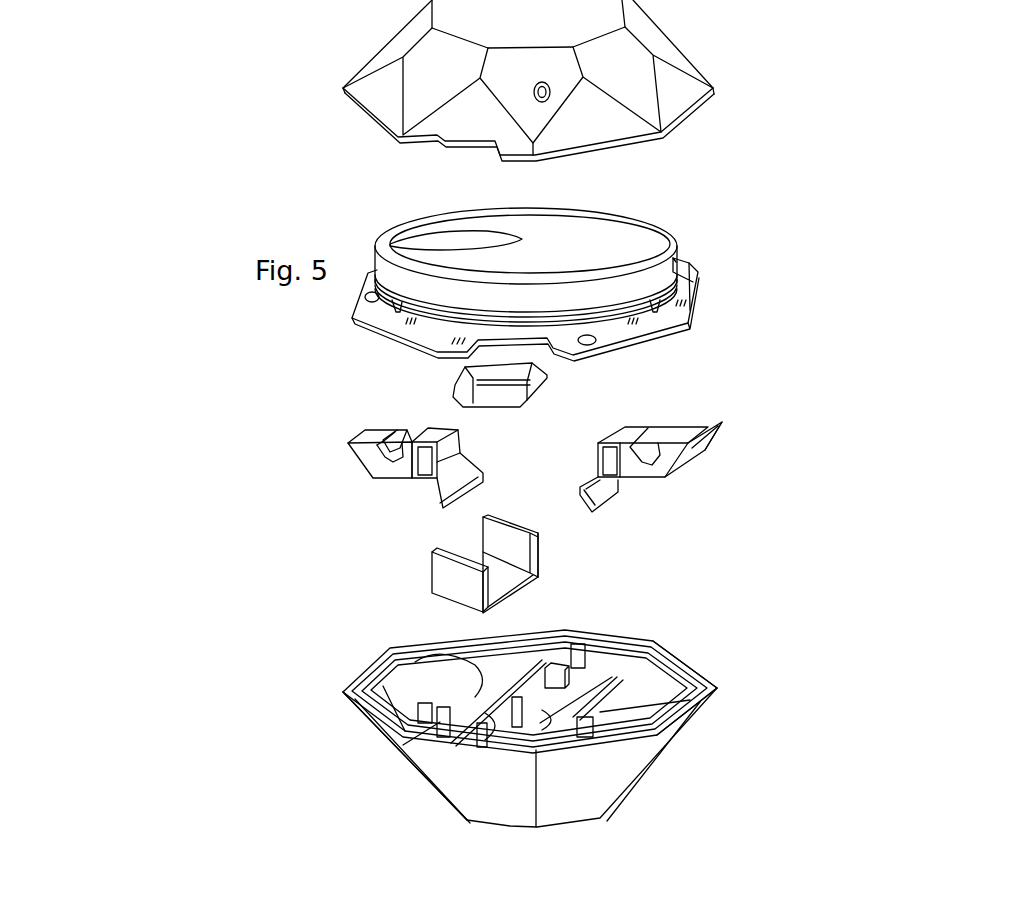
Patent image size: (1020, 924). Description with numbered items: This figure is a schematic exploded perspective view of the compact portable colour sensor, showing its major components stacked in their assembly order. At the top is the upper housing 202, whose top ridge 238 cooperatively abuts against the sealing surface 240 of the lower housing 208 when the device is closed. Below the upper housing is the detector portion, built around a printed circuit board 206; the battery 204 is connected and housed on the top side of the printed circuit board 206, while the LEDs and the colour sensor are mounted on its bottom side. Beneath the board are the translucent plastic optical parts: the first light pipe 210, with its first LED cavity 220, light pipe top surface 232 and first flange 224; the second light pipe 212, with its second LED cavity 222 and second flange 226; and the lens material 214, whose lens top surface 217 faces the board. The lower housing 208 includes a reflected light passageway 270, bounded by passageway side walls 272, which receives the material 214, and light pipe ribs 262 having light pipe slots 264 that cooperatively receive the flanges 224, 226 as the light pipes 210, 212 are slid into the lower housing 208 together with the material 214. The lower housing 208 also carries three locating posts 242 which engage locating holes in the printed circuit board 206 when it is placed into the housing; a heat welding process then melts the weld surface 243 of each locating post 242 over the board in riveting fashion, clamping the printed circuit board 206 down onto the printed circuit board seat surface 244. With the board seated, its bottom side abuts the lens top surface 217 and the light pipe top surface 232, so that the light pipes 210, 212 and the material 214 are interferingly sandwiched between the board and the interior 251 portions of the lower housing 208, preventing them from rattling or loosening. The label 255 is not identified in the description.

The upper housing 202 is at (677, 95).
The top ridge 238 is at (633, 152).
The battery 204 is at (647, 238).
The printed circuit board 206 is at (697, 305).
The second LED cavity 222 is at (388, 445).
The second light pipe 212 is at (372, 477).
The second flange 226 is at (420, 488).
The lens top surface 217 is at (502, 517).
The material 214 is at (543, 556).
The first LED cavity 220 is at (637, 452).
The light pipe top surface 232 is at (720, 425).
The first light pipe 210 is at (693, 462).
The first flange 224 is at (622, 483).
The lower housing 208 is at (673, 742).
The sealing surface 240 is at (677, 657).
The printed circuit board seat surface 244 is at (720, 688).
The reflected light passageway 270 is at (563, 752).
The interior 251 is at (653, 672).
The light pipe slots 264 is at (485, 680).
The weld surface 243 is at (365, 686).
The locating posts 242 is at (400, 714).
The light pipe ribs 262 is at (403, 745).
The passageway side walls 272 is at (500, 690).
The ledge 255 is at (383, 686).